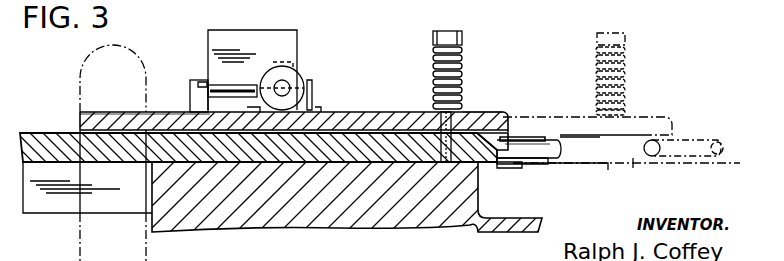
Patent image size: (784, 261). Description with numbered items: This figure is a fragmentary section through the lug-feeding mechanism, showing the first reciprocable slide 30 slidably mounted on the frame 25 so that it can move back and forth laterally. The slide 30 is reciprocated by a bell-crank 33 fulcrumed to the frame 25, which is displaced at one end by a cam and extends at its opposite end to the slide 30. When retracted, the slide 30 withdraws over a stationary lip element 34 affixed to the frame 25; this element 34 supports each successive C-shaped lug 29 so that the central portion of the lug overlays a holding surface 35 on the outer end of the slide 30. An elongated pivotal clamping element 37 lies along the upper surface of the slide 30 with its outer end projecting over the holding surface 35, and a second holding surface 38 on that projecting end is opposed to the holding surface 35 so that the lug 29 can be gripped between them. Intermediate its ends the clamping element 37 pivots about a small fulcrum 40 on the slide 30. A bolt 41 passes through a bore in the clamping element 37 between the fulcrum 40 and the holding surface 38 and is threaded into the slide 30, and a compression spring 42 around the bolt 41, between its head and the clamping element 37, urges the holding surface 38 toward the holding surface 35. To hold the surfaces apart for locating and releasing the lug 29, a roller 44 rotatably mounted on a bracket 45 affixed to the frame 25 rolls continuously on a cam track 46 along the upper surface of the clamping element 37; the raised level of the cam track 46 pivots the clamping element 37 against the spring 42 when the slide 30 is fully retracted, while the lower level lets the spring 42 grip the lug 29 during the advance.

The frame 25 is at (345, 210).
The lug 29 is at (553, 160).
The first reciprocable slide 30 is at (413, 113).
The bell-crank 33 is at (97, 253).
The stationary lip element 34 is at (518, 165).
The holding surface 35 is at (490, 164).
The pivotal clamping element 37 is at (478, 115).
The second holding surface 38 is at (514, 141).
The fulcrum 40 is at (370, 111).
The bolt 41 is at (462, 37).
The compression spring 42 is at (462, 80).
The roller 44 is at (293, 70).
The bracket 45 is at (200, 80).
The cam track 46 is at (163, 115).